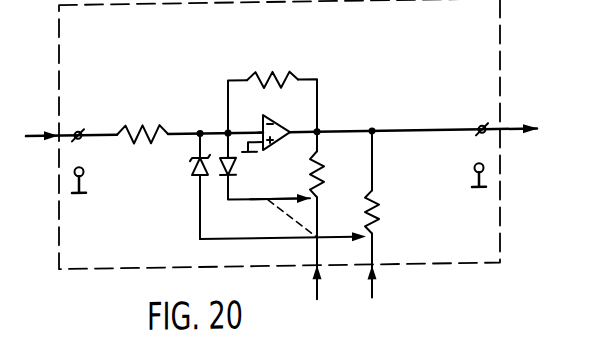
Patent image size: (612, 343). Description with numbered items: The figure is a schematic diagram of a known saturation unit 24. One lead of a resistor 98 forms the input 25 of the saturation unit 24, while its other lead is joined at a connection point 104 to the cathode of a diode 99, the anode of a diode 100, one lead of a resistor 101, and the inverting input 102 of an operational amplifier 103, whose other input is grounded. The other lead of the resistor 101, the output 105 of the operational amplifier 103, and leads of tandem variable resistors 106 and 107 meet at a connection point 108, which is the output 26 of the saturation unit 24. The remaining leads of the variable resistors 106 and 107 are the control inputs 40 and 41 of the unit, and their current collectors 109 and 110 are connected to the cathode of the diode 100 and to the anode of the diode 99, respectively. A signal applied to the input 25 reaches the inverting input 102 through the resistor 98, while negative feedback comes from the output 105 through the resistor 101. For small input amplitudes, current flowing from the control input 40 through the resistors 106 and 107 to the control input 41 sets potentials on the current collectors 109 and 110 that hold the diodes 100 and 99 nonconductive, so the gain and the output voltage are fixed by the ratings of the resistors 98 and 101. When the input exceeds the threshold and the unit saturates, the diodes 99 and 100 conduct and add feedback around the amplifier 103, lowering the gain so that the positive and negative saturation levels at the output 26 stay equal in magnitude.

The saturation unit 24 is at (504, 76).
The input 25 is at (36, 136).
The output 26 is at (512, 134).
The control input 40 is at (316, 292).
The control input 41 is at (378, 278).
The resistor 98 is at (145, 127).
The diode 99 is at (192, 171).
The diode 100 is at (234, 170).
The resistor 101 is at (254, 82).
The inverting input 102 is at (262, 129).
The operational amplifier 103 is at (279, 131).
The connection point 104 is at (214, 131).
The output 105 is at (305, 132).
The variable resistor 106 is at (323, 185).
The variable resistor 107 is at (380, 213).
The connection point 108 is at (370, 132).
The current collector 109 is at (300, 201).
The current collector 110 is at (350, 242).